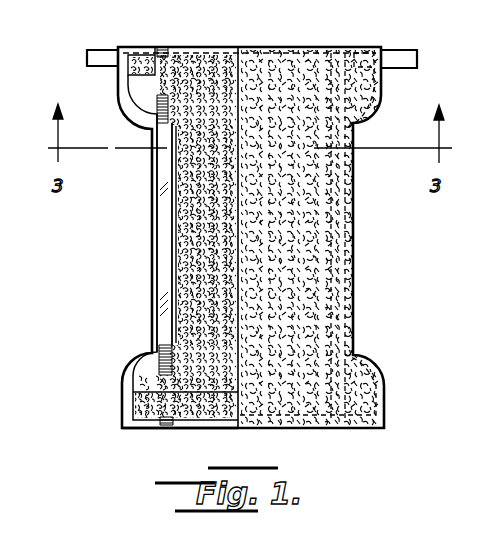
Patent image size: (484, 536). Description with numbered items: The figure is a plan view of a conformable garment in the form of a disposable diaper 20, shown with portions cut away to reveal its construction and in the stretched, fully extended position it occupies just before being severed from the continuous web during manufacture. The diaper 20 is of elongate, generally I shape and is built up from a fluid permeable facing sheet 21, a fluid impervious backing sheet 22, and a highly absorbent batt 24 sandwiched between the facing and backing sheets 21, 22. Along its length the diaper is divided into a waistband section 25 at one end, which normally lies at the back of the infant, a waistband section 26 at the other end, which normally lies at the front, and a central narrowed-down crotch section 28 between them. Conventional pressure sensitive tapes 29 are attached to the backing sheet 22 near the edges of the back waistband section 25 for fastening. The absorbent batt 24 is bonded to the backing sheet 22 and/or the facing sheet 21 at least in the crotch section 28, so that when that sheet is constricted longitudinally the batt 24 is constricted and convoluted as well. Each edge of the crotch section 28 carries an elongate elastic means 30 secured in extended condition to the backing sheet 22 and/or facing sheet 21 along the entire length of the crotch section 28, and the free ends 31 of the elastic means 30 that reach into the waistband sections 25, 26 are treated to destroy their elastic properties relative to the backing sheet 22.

The disposable diaper 20 is at (297, 31).
The facing sheet 21 is at (312, 262).
The backing sheet 22 is at (145, 430).
The absorbent batt 24 is at (172, 267).
The waistband section 25 is at (113, 42).
The waistband section 26 is at (118, 352).
The crotch section 28 is at (140, 127).
The pressure sensitive tapes 29 is at (89, 50).
The elastic means 30 is at (356, 308).
The free ends 31 is at (172, 50).